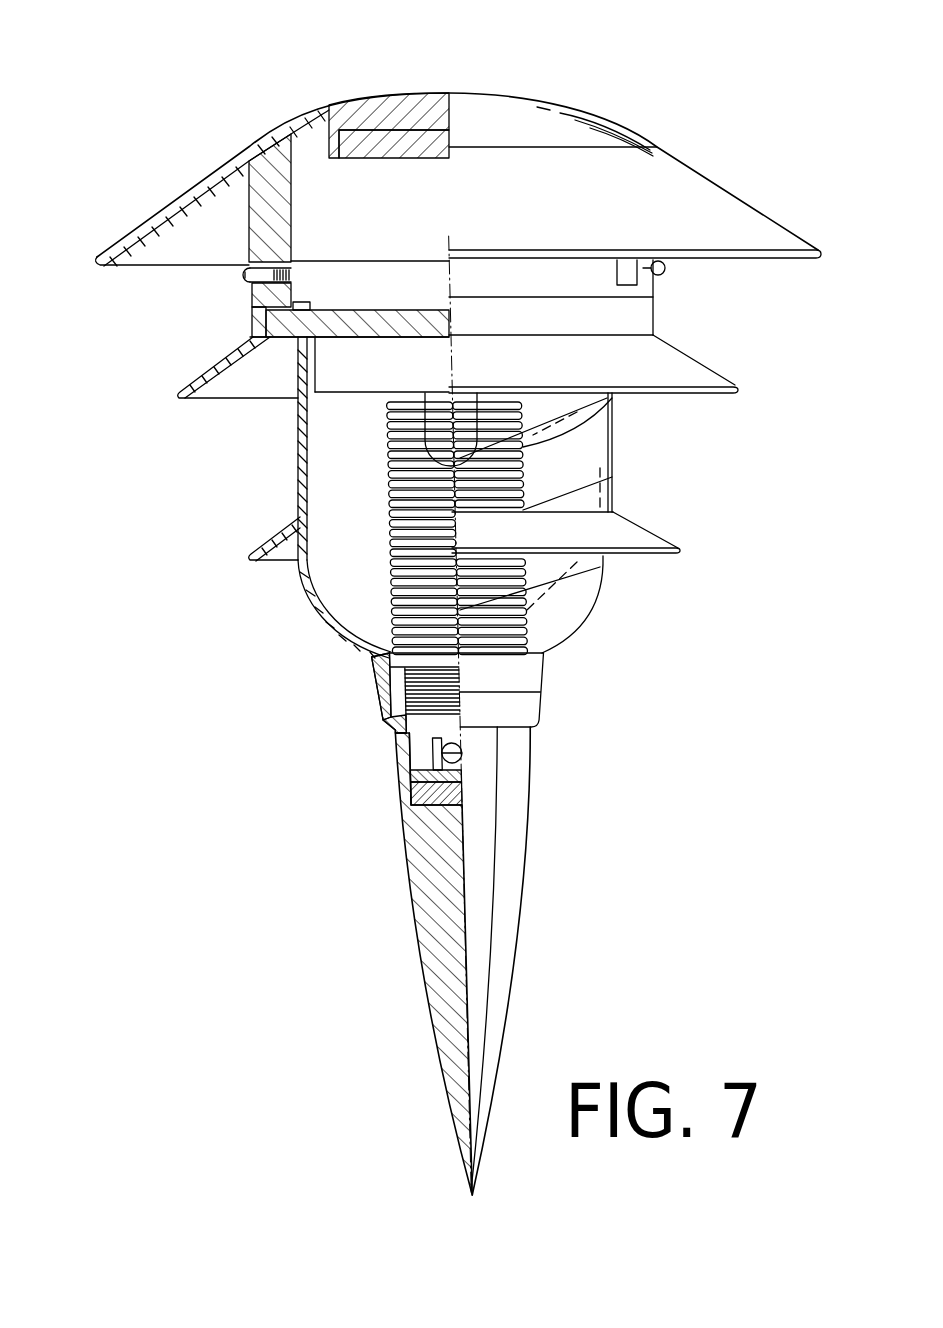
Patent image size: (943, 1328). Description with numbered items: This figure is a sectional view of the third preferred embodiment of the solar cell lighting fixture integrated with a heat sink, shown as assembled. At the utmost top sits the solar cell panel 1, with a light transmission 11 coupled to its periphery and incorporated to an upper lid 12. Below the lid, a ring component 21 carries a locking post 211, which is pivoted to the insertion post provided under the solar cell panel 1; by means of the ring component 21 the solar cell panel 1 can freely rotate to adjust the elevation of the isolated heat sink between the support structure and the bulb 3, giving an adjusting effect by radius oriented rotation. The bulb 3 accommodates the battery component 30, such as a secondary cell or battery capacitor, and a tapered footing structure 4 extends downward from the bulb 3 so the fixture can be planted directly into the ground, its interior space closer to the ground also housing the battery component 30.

The solar cell panel 1 is at (413, 143).
The light transmission 11 is at (370, 110).
The upper lid 12 is at (217, 172).
The locking post 211 is at (248, 265).
The ring component 21 is at (250, 315).
The bulb 3 is at (293, 468).
The battery component 30 is at (437, 747).
The tapered footing structure 4 is at (440, 913).